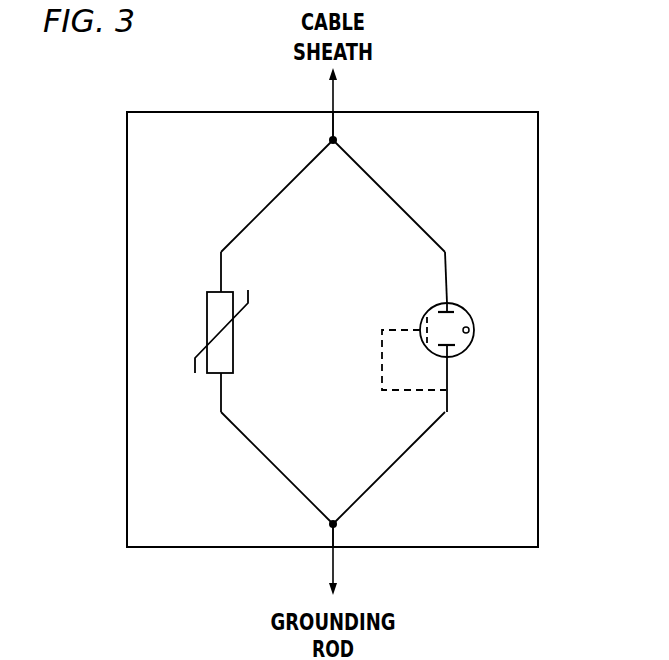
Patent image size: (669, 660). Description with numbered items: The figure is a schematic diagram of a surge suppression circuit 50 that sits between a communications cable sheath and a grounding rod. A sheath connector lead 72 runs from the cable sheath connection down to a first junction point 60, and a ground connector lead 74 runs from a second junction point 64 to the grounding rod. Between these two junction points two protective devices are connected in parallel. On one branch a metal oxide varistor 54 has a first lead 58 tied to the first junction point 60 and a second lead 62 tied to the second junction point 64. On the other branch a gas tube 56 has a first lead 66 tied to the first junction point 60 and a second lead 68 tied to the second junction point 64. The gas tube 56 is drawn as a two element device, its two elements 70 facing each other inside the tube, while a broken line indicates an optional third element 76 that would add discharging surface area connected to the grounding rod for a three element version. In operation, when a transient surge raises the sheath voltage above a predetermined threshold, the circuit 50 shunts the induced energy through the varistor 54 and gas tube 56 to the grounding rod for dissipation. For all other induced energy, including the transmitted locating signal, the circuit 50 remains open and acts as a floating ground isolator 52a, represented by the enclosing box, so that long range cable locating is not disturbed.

The surge suppression circuit 50 is at (515, 466).
The floating ground isolator 52a is at (538, 190).
The metal oxide varistor 54 is at (212, 312).
The gas tube 56 is at (473, 338).
The first lead of MOV 58 is at (272, 201).
The first junction point 60 is at (338, 138).
The second lead of MOV 62 is at (272, 466).
The second junction point 64 is at (330, 526).
The first lead of gas tube 66 is at (408, 213).
The second lead of gas tube 68 is at (400, 458).
The gas tube elements 70 is at (452, 303).
The sheath connector lead 72 is at (333, 127).
The ground connector lead 74 is at (337, 537).
The third element 76 is at (412, 320).